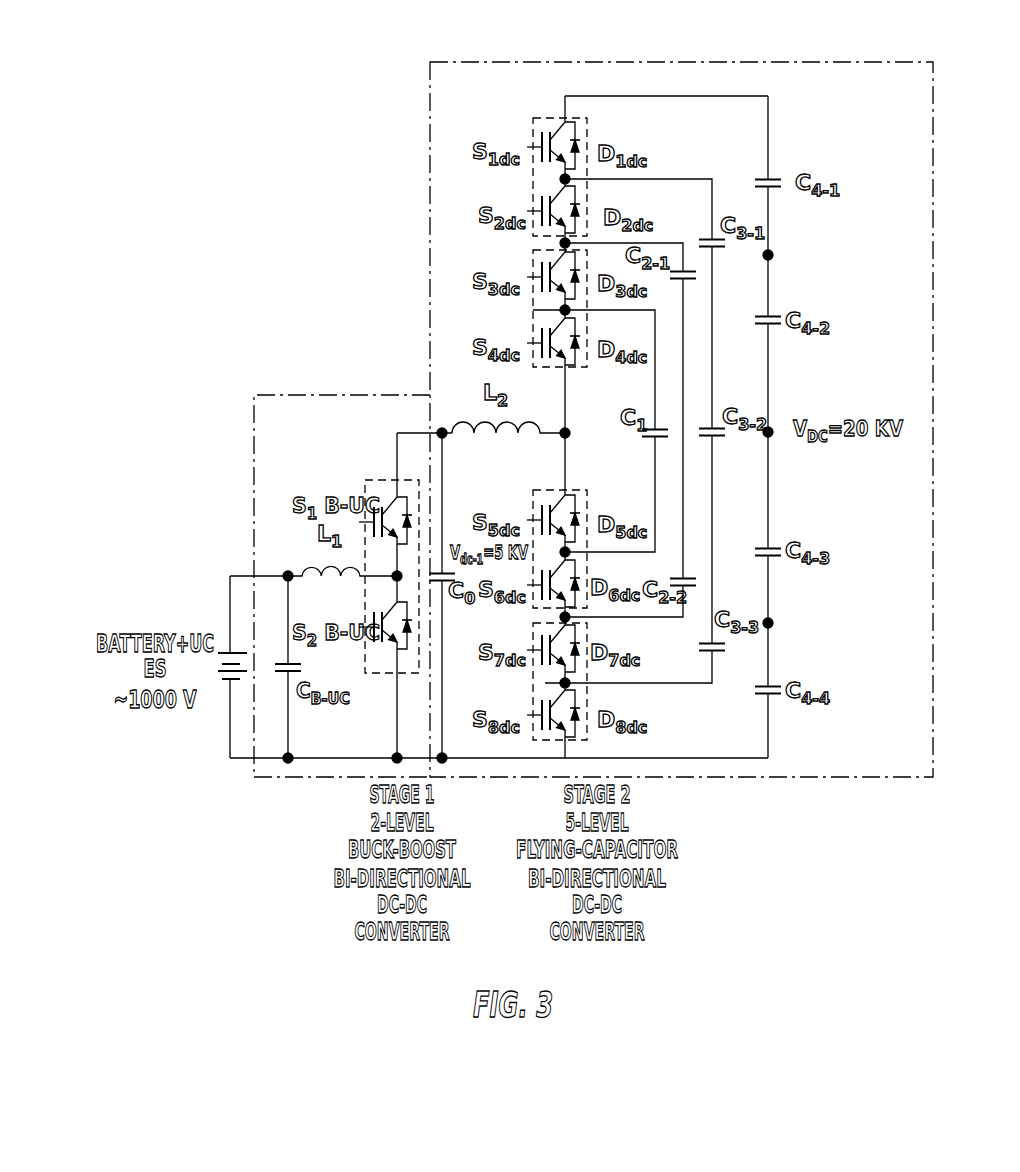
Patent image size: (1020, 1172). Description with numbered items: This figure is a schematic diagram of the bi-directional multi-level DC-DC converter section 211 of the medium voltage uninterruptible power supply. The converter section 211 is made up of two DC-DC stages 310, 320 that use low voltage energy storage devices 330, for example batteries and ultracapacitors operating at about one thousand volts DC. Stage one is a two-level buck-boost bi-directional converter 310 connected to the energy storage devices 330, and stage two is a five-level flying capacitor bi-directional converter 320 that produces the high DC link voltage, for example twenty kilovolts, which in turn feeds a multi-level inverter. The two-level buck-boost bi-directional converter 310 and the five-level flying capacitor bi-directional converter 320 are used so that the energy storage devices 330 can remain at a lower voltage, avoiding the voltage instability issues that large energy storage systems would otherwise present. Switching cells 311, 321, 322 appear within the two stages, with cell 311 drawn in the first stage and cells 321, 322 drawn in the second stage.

The bi-directional multi-level DC-DC converter section 211 is at (170, 786).
The two-level buck-boost bi-directional converter 310 is at (290, 395).
The stage 1 switching cell 311 is at (372, 562).
The five-level flying capacitor bi-directional converter 320 is at (430, 62).
The first switching cell of stage 2 321 is at (528, 185).
The second switching cell of stage 2 322 is at (533, 312).
The energy storage devices 330 is at (223, 666).